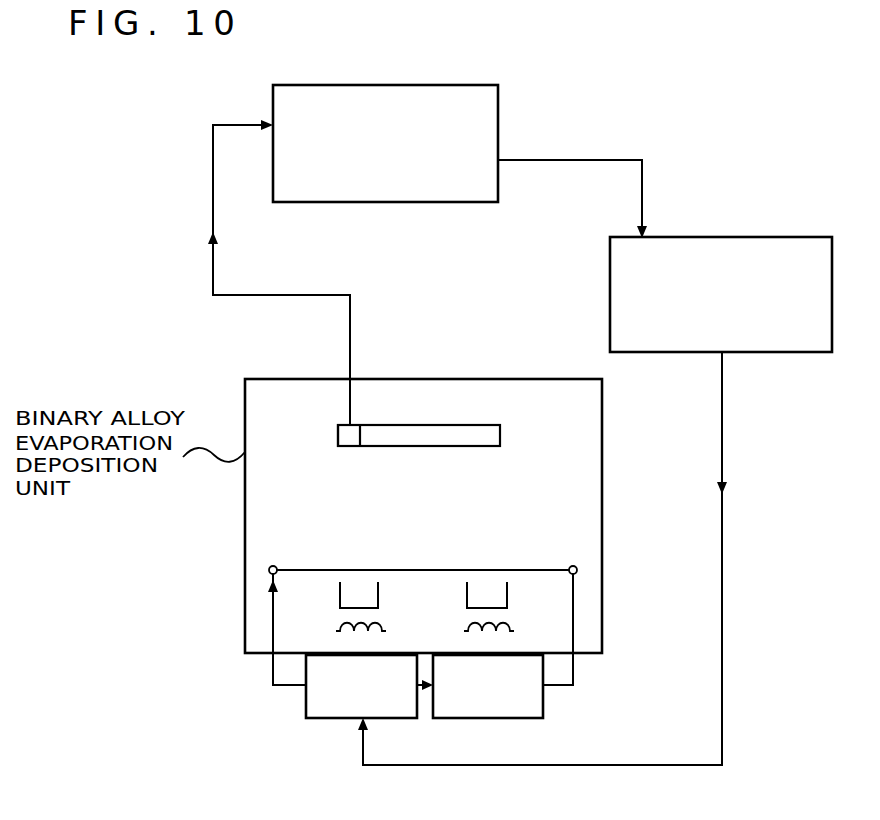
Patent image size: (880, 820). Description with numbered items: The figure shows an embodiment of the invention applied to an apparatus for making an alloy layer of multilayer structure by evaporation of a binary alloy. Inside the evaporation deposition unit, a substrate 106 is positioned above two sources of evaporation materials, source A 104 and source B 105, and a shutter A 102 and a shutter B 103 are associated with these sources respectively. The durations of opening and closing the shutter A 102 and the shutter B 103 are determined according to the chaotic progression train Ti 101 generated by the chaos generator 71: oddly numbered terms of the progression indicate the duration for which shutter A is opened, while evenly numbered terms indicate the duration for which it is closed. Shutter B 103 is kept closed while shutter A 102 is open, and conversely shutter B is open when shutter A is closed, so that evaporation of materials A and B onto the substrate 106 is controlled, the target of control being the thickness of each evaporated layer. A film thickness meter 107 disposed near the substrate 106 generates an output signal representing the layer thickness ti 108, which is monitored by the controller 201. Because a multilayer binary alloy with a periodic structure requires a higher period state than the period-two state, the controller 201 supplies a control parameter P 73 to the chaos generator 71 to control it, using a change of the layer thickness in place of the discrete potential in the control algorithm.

The controller 201 is at (500, 106).
The control parameter P 73 is at (645, 158).
The chaos generator 71 is at (610, 246).
The chaotic progression train Ti 101 is at (722, 554).
The layer thickness ti 108 is at (219, 124).
The film thickness meter 107 is at (338, 433).
The substrate 106 is at (500, 438).
The source of evaporation material A 104 is at (378, 591).
The source of evaporation material B 105 is at (507, 591).
The shutter A 102 is at (306, 700).
The shutter B 103 is at (543, 708).